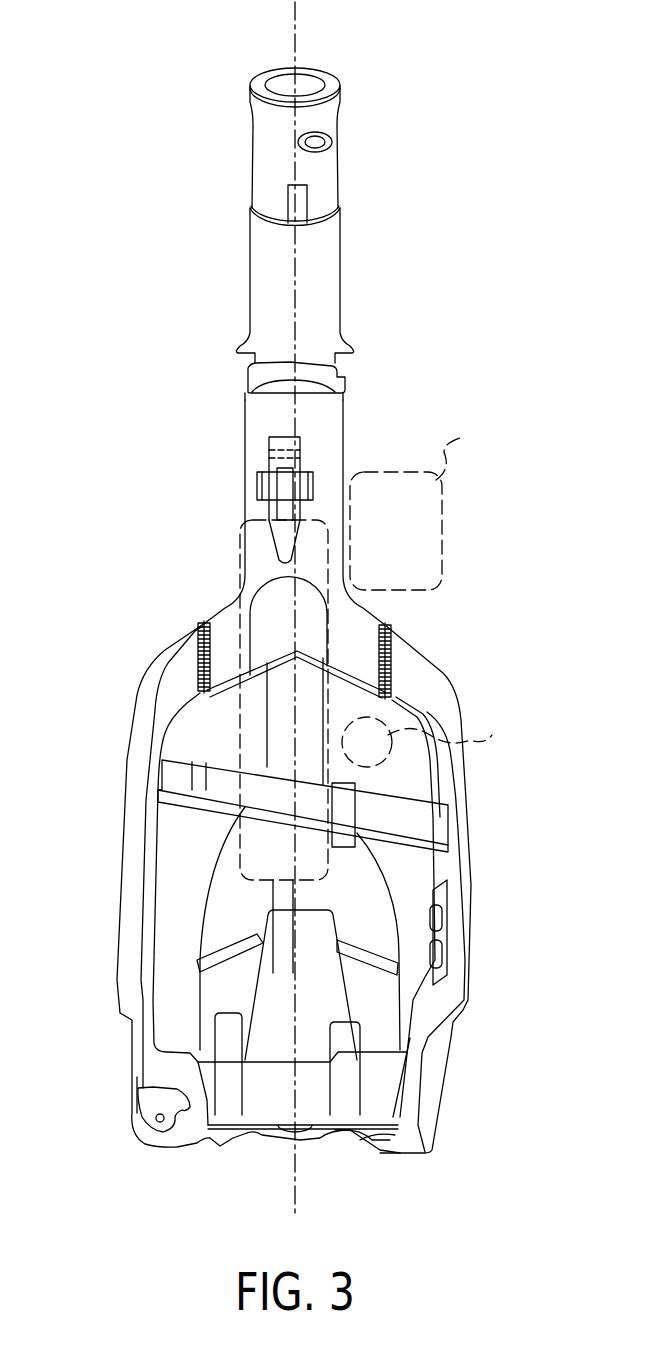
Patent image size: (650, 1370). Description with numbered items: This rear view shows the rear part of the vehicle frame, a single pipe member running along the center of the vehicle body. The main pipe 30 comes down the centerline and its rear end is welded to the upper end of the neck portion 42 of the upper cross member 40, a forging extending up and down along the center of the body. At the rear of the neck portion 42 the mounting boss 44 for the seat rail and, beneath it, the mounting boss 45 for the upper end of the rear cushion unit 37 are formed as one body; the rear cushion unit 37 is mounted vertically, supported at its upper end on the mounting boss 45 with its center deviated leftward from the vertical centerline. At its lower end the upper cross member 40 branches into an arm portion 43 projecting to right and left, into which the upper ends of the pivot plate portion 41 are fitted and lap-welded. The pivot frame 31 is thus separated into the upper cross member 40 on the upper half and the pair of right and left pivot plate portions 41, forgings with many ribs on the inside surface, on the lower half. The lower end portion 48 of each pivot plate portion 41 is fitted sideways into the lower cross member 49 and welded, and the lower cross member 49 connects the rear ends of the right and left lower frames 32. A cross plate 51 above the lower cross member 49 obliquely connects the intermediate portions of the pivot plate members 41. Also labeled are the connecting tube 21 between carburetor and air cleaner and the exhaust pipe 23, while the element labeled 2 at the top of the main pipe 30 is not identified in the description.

The threaded tubular end / conduit 2 is at (345, 82).
The main pipe 30 is at (268, 258).
The upper cross member 40 is at (237, 452).
The neck portion 42 is at (256, 414).
The mounting boss 44 is at (300, 438).
The mounting boss 45 is at (268, 490).
The connecting tube 21 is at (427, 503).
The rear cushion unit 37 is at (238, 545).
The arm portion 43 is at (226, 612).
The pivot frame 31 is at (307, 881).
The pivot plate portion 41 is at (140, 662).
The exhaust pipe 23 is at (434, 741).
The cross plate 51 is at (212, 790).
The lower frames 32 is at (354, 990).
The lower end portion 48 is at (132, 1077).
The lower cross member 49 is at (290, 1113).